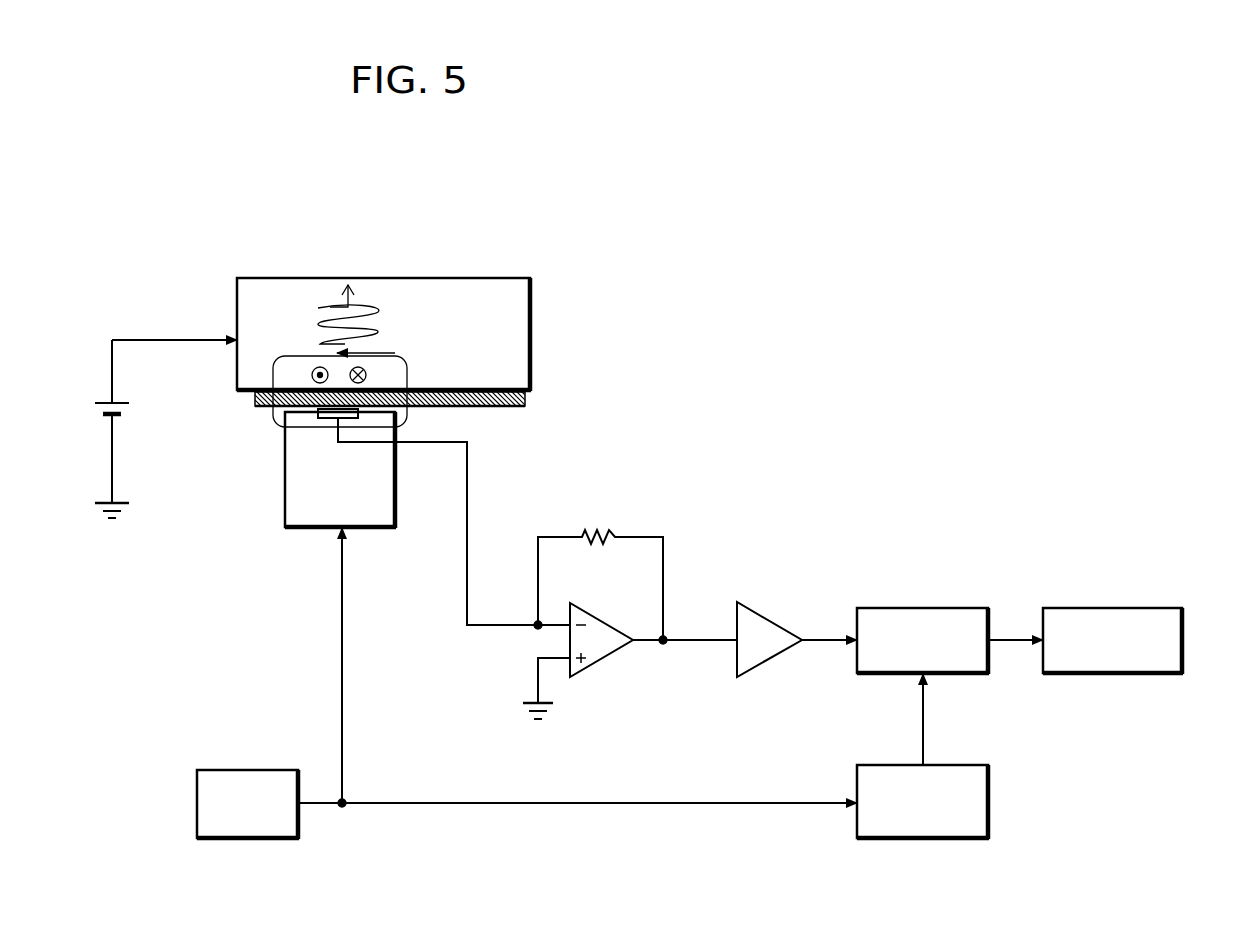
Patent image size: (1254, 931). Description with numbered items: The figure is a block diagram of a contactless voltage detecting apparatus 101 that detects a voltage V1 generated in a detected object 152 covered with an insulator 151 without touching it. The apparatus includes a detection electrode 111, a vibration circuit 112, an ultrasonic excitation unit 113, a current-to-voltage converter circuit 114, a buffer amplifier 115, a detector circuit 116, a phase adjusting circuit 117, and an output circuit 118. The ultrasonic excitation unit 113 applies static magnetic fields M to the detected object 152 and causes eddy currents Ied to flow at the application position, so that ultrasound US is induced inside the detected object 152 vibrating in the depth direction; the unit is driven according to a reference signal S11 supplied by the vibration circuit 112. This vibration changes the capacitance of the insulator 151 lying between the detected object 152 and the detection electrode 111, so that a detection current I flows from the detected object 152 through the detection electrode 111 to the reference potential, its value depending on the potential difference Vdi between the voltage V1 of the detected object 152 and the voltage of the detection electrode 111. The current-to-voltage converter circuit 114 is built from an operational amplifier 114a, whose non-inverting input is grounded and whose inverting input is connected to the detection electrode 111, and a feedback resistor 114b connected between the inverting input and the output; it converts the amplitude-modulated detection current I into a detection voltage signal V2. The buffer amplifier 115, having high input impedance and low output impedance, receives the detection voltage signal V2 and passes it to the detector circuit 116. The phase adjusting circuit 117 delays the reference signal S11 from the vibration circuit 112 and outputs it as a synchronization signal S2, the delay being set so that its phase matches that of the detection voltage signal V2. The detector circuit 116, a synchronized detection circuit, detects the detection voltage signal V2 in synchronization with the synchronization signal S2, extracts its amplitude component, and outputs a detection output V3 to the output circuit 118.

The voltage detecting apparatus 101 is at (850, 285).
The detection electrode 111 is at (327, 419).
The vibration circuit 112 is at (265, 770).
The ultrasonic excitation unit 113 is at (367, 528).
The current-to-voltage converter circuit 114 is at (596, 587).
The operational amplifier 114a is at (575, 606).
The feedback resistor 114b is at (597, 530).
The buffer amplifier 115 is at (748, 607).
The detector circuit 116 is at (942, 607).
The phase adjusting circuit 117 is at (945, 765).
The output circuit 118 is at (1143, 607).
The insulator 151 is at (502, 406).
The detected object 152 is at (245, 278).
The ultrasound US is at (318, 308).
The detected voltage V1 is at (194, 333).
The potential difference Vdi is at (230, 392).
The eddy currents Ied is at (296, 356).
The static magnetic fields M is at (406, 418).
The detection current I is at (522, 613).
The detection voltage signal V2 is at (693, 636).
The detection output V3 is at (1017, 635).
The synchronization signal S2 is at (919, 713).
The reference signal S11 is at (392, 800).